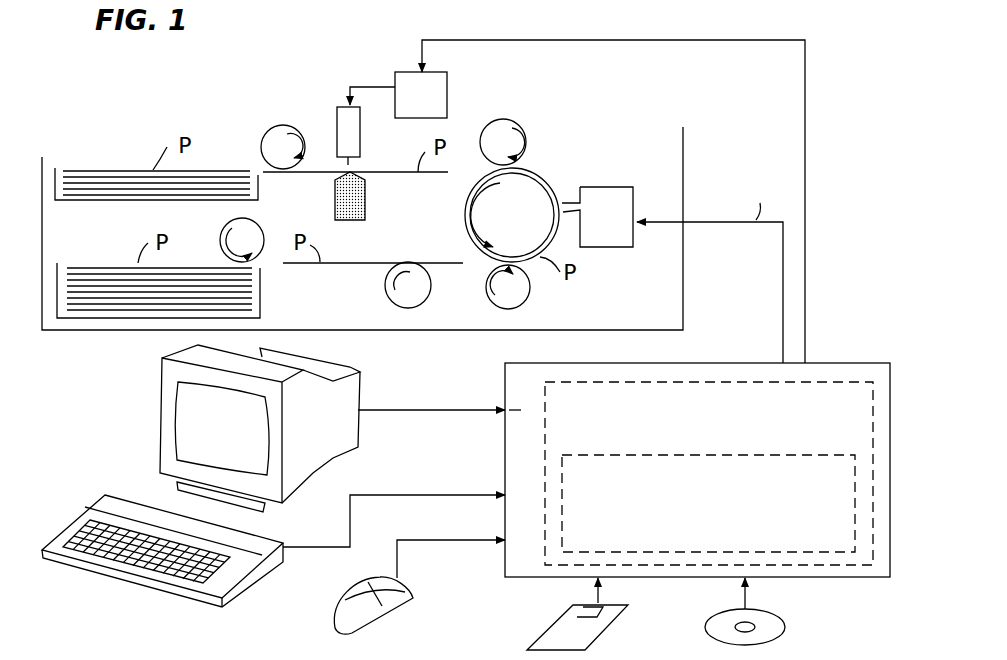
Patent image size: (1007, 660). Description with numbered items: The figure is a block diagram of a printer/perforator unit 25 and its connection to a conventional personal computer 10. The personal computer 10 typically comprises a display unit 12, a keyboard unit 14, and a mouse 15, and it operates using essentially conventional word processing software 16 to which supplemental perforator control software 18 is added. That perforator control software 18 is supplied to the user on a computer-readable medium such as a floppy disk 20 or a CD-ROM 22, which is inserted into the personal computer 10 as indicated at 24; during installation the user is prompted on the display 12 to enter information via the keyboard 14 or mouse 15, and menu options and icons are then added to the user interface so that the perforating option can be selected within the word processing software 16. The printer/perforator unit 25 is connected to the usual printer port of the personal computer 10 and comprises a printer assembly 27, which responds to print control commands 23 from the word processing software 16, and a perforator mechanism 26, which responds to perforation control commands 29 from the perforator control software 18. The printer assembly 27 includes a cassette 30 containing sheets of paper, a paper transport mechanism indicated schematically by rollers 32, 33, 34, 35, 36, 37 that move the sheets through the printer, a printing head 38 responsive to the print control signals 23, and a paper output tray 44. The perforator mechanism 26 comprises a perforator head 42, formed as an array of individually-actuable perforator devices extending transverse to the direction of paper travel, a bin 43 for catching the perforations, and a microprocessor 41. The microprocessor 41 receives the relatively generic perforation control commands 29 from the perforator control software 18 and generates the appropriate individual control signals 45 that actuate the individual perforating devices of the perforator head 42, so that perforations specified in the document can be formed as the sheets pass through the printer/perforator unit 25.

The personal computer 10 is at (232, 620).
The display unit 12 is at (162, 420).
The keyboard unit 14 is at (77, 517).
The mouse 15 is at (412, 602).
The word processing software 16 is at (820, 378).
The perforator control software 18 is at (847, 552).
The floppy disk 20 is at (557, 618).
The CD-ROM 22 is at (783, 617).
The print control commands 23 is at (783, 295).
The media insertion 24 is at (657, 615).
The printer/perforator unit 25 is at (143, 102).
The perforator mechanism 26 is at (322, 82).
The printer assembly 27 is at (584, 144).
The perforation control commands 29 is at (783, 37).
The cassette 30 is at (262, 300).
The roller 32 is at (220, 242).
The roller 33 is at (393, 300).
The roller 34 is at (530, 300).
The roller 35 is at (465, 228).
The roller 36 is at (517, 117).
The roller 37 is at (258, 145).
The printing head 38 is at (613, 187).
The microprocessor 41 is at (447, 90).
The perforator head 42 is at (362, 137).
The bin 43 is at (333, 203).
The paper output tray 44 is at (75, 200).
The individual control signals 45 is at (372, 85).